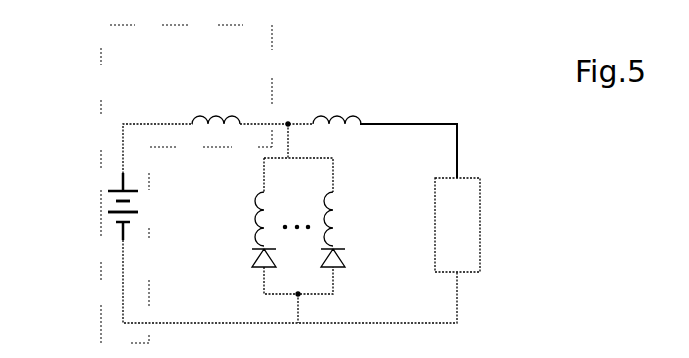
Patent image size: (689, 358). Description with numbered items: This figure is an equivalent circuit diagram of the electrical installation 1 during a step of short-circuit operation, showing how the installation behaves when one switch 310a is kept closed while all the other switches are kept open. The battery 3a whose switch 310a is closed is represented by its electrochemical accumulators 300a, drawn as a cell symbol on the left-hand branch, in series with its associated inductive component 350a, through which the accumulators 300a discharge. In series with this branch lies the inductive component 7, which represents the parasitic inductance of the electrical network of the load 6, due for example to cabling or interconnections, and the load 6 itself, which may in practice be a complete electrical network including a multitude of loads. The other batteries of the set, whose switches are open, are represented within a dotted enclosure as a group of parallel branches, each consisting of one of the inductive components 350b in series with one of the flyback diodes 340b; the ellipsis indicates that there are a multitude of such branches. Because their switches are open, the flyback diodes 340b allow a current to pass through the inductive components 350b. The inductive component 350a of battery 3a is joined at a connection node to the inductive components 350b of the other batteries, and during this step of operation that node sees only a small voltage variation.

The electrical installation 1 is at (432, 109).
The battery 3a is at (100, 185).
The load 6 is at (450, 236).
The inductive component 7 is at (336, 112).
The electrochemical accumulators 300a is at (108, 207).
The switch 310a is at (160, 122).
The flyback diodes 340b is at (252, 255).
The inductive component 350a is at (218, 116).
The inductive components 350b is at (253, 217).